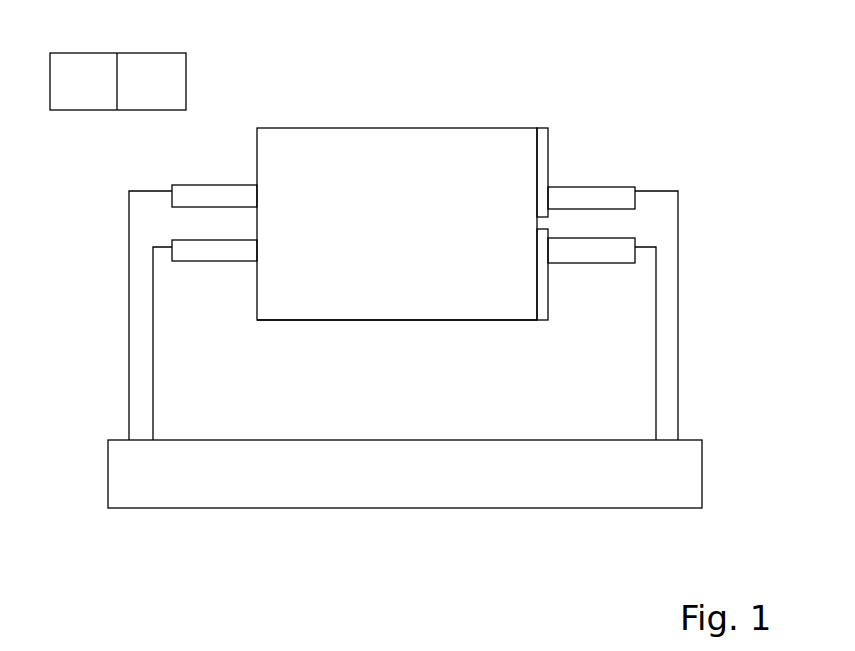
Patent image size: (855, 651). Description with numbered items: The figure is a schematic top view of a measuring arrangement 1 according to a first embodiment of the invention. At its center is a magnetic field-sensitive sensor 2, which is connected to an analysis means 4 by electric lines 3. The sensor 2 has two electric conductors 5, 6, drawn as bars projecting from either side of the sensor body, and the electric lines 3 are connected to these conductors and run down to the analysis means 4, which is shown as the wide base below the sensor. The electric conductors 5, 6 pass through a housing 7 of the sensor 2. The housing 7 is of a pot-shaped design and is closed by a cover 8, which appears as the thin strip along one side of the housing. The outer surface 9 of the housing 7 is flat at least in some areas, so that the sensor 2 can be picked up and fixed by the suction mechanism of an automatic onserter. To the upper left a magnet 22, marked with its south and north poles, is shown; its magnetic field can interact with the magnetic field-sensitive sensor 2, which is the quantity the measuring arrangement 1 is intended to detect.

The measuring arrangement 1 is at (622, 70).
The magnetic field-sensitive sensor 2 is at (322, 128).
The electric lines 3 is at (129, 350).
The analysis means 4 is at (382, 480).
The electric conductor 5 is at (208, 247).
The electric conductor 6 is at (214, 197).
The housing 7 is at (432, 303).
The cover 8 is at (541, 137).
The outer surface 9 is at (423, 145).
The magnet 22 is at (186, 80).